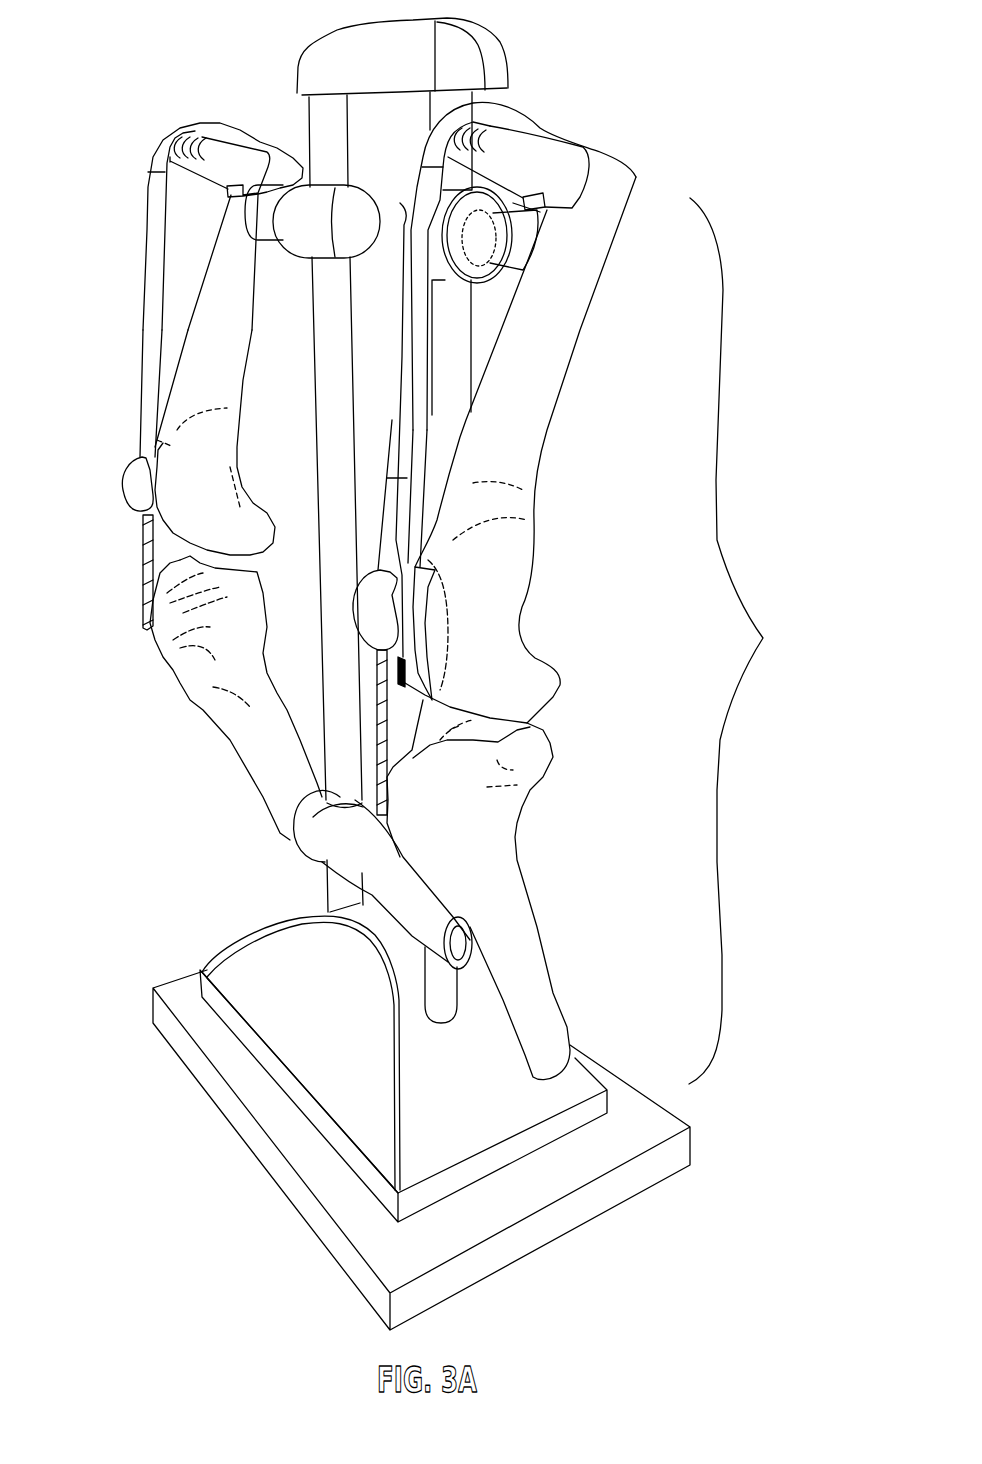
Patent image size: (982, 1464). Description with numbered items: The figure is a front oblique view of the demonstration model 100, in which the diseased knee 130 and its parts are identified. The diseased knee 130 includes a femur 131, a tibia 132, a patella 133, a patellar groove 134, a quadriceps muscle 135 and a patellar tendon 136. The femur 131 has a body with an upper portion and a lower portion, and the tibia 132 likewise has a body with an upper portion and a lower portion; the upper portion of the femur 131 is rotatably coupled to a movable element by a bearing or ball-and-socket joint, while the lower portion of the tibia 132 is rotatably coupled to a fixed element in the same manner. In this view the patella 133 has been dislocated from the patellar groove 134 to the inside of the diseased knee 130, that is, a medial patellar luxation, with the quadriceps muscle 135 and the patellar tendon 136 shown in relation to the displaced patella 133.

The demonstration model 100 is at (748, 48).
The diseased knee 130 is at (479, 630).
The femur 131 is at (503, 503).
The tibia 132 is at (483, 828).
The patella 133 is at (357, 614).
The patellar groove 134 is at (397, 660).
The quadriceps muscle 135 is at (405, 415).
The patellar tendon 136 is at (307, 836).